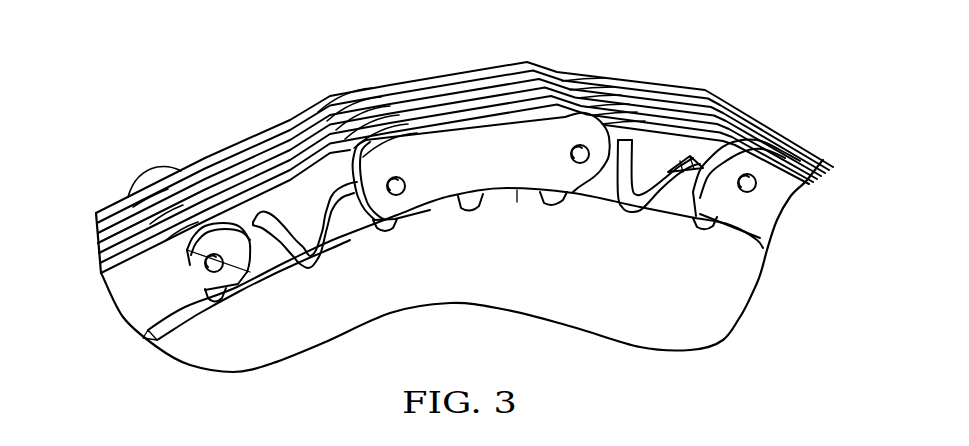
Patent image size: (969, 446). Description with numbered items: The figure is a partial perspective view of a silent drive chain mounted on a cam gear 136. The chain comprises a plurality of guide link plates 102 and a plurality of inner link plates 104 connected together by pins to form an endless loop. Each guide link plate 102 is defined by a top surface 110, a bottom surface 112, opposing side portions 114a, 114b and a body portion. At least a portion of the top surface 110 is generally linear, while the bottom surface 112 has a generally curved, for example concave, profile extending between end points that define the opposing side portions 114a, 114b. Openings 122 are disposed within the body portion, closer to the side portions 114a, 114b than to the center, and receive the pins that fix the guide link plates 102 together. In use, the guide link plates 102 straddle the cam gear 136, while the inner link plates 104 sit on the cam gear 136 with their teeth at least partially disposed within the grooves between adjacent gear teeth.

The guide link plate 102 is at (550, 150).
The inner link plate 104 is at (670, 140).
The top surface 110 is at (430, 128).
The bottom surface 112 is at (517, 195).
The side portion 114a is at (349, 171).
The side portion 114b is at (616, 135).
The opening 122 is at (397, 195).
The cam gear 136 is at (518, 277).